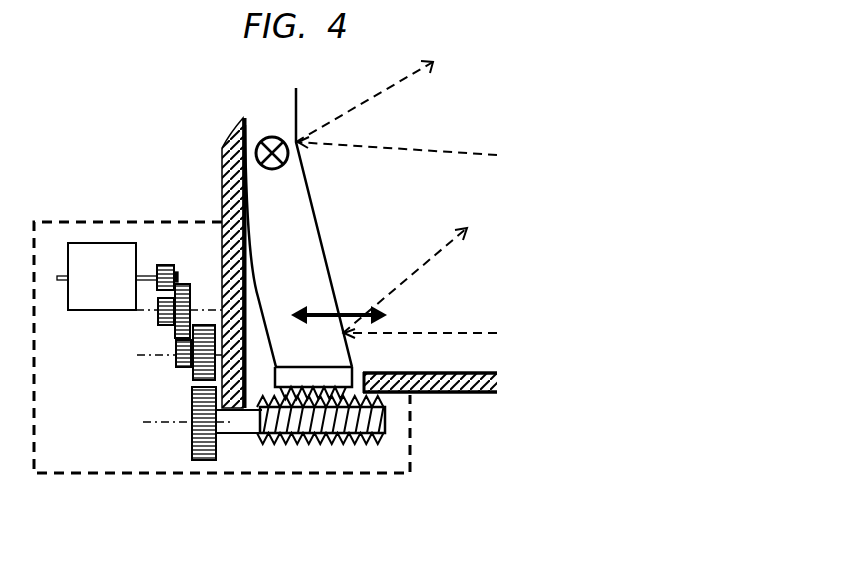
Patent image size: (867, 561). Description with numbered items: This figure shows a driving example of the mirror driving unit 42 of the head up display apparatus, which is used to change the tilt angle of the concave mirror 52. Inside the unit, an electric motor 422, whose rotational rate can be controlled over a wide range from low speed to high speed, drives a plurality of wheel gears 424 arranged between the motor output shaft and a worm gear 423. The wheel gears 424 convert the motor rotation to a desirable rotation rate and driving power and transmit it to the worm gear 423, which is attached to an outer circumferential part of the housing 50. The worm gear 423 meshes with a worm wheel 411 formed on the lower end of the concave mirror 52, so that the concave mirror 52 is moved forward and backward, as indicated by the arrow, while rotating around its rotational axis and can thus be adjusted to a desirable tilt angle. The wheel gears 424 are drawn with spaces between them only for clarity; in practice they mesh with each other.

The mirror driving unit 42 is at (230, 474).
The housing 50 is at (472, 393).
The concave mirror 52 is at (315, 225).
The worm wheel 411 is at (343, 380).
The electric motor 422 is at (83, 312).
The worm gear 423 is at (338, 445).
The wheel gears 424 is at (165, 360).